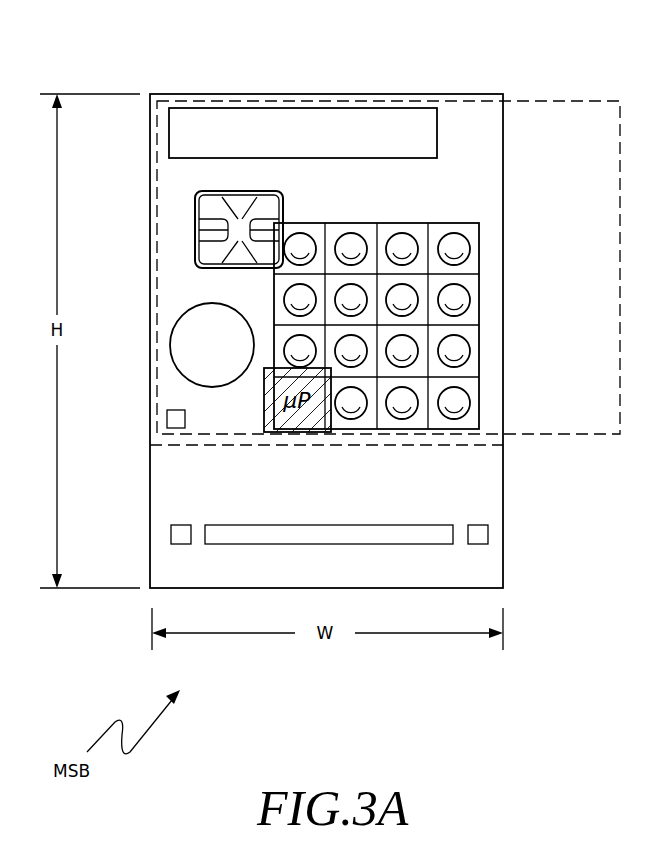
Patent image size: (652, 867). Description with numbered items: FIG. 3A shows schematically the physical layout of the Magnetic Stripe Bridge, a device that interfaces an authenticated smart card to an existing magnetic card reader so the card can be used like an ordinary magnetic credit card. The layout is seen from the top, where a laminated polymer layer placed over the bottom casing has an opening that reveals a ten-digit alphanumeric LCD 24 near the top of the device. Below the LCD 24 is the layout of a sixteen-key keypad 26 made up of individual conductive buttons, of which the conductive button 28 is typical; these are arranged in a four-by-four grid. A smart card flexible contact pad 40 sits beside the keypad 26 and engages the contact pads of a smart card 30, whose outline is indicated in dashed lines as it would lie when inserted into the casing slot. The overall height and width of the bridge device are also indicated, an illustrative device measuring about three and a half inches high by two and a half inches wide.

The alphanumeric LCD 24 is at (271, 130).
The keypad 26 is at (490, 312).
The conductive button 28 is at (460, 253).
The smart card 30 is at (580, 95).
The smart card flexible contact pad 40 is at (178, 228).